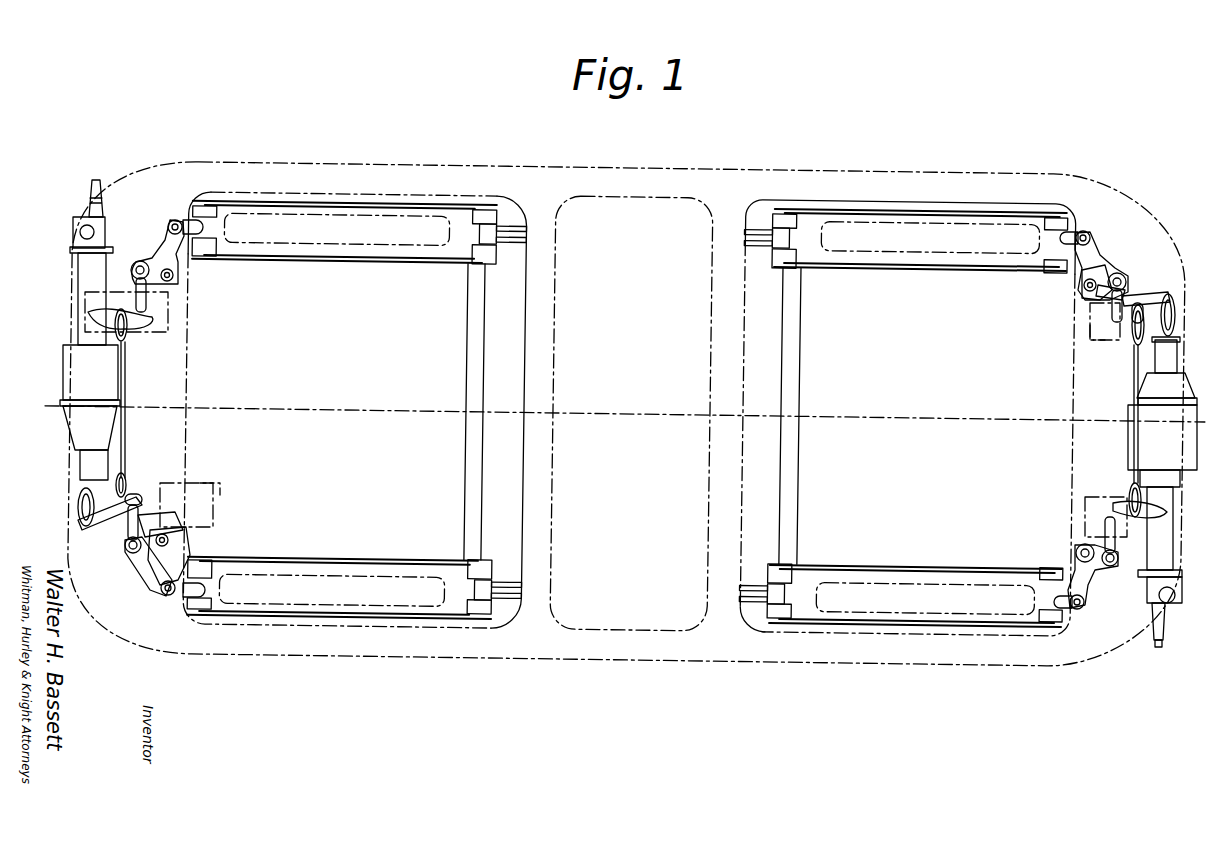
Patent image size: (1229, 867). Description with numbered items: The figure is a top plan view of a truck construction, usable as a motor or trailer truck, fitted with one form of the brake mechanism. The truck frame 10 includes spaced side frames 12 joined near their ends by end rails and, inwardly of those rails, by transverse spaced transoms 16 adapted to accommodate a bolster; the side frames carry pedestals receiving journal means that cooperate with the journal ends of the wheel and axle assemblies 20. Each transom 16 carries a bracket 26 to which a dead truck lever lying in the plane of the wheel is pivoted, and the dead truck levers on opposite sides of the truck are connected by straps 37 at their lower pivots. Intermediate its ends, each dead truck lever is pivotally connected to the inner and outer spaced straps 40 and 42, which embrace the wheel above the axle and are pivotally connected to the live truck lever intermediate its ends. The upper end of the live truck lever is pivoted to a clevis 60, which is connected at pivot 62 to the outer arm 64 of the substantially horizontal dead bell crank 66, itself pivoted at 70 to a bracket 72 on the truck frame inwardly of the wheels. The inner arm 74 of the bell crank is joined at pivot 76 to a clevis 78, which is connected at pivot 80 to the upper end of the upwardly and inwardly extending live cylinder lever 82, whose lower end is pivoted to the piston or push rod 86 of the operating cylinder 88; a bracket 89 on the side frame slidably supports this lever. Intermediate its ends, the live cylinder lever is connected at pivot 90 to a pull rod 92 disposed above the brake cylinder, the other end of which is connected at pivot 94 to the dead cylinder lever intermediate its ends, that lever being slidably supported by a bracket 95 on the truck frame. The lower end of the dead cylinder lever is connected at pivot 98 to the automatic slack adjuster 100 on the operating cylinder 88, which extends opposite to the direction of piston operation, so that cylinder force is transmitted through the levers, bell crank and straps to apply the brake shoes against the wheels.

The truck frame 10 is at (548, 205).
The side frame 12 is at (314, 177).
The transom 16 is at (713, 325).
The wheel and axle assembly 20 is at (337, 236).
The bracket 26 is at (512, 222).
The strap 37 is at (478, 355).
The inner strap 40 is at (260, 261).
The outer strap 42 is at (248, 205).
The clevis 60 is at (192, 222).
The pivotal connection 62 is at (174, 220).
The outer arm 64 is at (160, 565).
The dead bell crank 66 is at (160, 548).
The pivotal connection 70 is at (178, 537).
The bracket 72 is at (215, 538).
The inner arm 74 is at (175, 527).
The pivotal connection 76 is at (130, 550).
The clevis 78 is at (128, 522).
The pivotal connection 80 is at (143, 518).
The live cylinder lever 82 is at (122, 475).
The piston or push rod 86 is at (89, 527).
The operating cylinder 88 is at (70, 387).
The bracket 89 is at (218, 490).
The pivotal connection 90 is at (125, 498).
The pull rod 92 is at (119, 393).
The pivotal connection 94 is at (112, 314).
The bracket 95 is at (160, 318).
The pivotal connection 98 is at (93, 318).
The automatic slack adjuster 100 is at (100, 270).